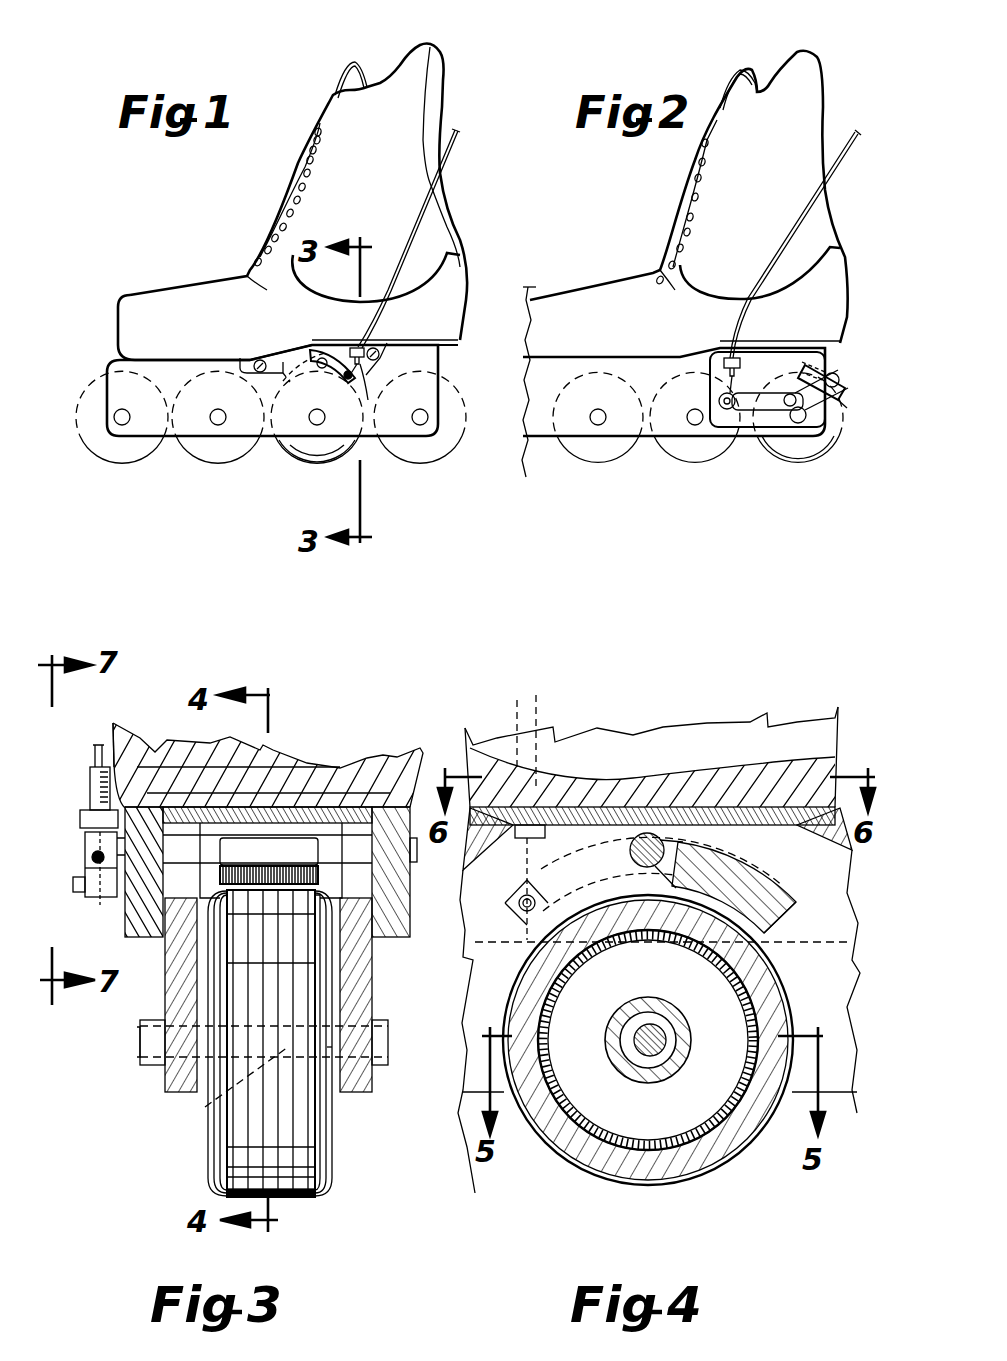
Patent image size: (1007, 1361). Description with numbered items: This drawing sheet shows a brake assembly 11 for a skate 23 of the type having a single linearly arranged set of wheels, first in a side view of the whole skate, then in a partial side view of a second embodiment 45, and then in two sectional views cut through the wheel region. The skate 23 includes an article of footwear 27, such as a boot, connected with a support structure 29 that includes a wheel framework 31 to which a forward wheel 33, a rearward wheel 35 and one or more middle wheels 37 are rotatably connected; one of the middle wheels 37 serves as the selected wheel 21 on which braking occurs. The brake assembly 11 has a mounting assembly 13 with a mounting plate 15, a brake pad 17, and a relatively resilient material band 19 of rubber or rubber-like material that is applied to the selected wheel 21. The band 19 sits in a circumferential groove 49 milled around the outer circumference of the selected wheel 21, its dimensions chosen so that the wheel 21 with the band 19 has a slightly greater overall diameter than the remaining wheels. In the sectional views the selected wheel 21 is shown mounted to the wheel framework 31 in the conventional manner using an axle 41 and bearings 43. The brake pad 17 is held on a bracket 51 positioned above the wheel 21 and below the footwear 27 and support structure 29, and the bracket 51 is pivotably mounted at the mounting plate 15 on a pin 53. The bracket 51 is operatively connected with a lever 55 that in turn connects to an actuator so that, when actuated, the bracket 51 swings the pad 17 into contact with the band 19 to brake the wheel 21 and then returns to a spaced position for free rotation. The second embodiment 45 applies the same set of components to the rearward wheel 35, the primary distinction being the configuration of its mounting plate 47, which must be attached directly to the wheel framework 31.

In FIG. 1, the brake assembly 11 is at (410, 310).
In FIG. 1, the mounting assembly 13 is at (283, 360).
In FIG. 1, the mounting plate 15 is at (368, 400).
In FIG. 3, the mounting plate 15 is at (127, 928).
In FIG. 1, the brake pad 17 is at (327, 338).
In FIG. 2, the brake pad 17 is at (833, 405).
In FIG. 3, the brake pad 17 is at (262, 887).
In FIG. 4, the brake pad 17 is at (770, 923).
In FIG. 1, the relatively resilient material band 19 is at (302, 453).
In FIG. 2, the relatively resilient material band 19 is at (815, 460).
In FIG. 3, the relatively resilient material band 19 is at (240, 1155).
In FIG. 4, the relatively resilient material band 19 is at (717, 1162).
In FIG. 1, the selected wheel 21 is at (325, 448).
In FIG. 3, the selected wheel 21 is at (330, 1177).
In FIG. 4, the selected wheel 21 is at (667, 1153).
In FIG. 1, the skate 23 is at (78, 302).
In FIG. 1, the footwear 27 is at (453, 203).
In FIG. 2, the footwear 27 is at (792, 261).
In FIG. 3, the footwear 27 is at (150, 698).
In FIG. 1, the support structure 29 is at (445, 362).
In FIG. 3, the support structure 29 is at (313, 817).
In FIG. 1, the wheel framework 31 is at (173, 438).
In FIG. 2, the wheel framework 31 is at (638, 368).
In FIG. 3, the wheel framework 31 is at (173, 1077).
In FIG. 4, the wheel framework 31 is at (659, 1000).
In FIG. 1, the forward wheel 33 is at (90, 440).
In FIG. 1, the rearward wheel 35 is at (438, 447).
In FIG. 1, the middle wheels 37 is at (300, 445).
In FIG. 3, the axle 41 is at (205, 1107).
In FIG. 4, the axle 41 is at (640, 1043).
In FIG. 3, the bearings 43 is at (327, 1047).
In FIG. 4, the bearings 43 is at (633, 1063).
In FIG. 2, the second embodiment 45 is at (875, 352).
In FIG. 2, the mounting plate 47 is at (748, 413).
In FIG. 4, the circumferential groove 49 is at (633, 1147).
In FIG. 4, the bracket 51 is at (758, 878).
In FIG. 4, the pin 53 is at (660, 835).
In FIG. 4, the lever 55 is at (628, 810).